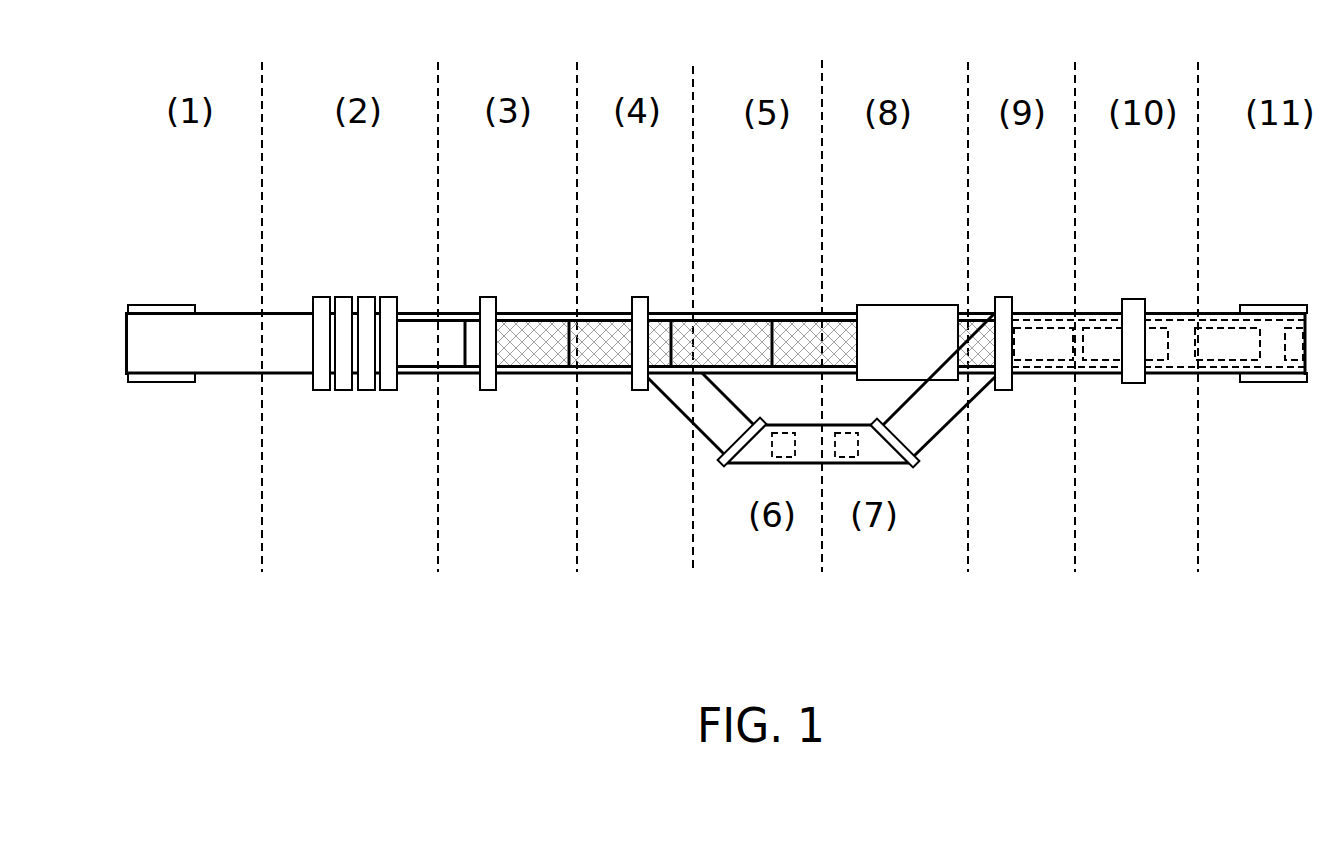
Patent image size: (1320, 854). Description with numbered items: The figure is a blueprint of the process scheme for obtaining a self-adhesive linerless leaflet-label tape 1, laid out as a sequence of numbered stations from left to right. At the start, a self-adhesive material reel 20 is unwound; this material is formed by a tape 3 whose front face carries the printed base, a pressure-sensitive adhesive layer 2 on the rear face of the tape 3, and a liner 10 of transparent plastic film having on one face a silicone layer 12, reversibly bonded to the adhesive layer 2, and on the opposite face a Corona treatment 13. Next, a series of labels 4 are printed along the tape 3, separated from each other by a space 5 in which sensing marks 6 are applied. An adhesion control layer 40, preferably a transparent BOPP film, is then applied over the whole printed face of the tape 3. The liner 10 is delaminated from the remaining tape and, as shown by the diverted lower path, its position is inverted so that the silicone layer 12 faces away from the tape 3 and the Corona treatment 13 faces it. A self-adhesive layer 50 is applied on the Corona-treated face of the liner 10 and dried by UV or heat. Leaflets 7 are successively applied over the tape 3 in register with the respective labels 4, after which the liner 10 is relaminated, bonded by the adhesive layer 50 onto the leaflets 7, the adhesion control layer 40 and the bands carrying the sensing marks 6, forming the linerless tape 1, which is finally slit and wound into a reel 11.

The self-adhesive linerless leaflet-label tape 1 is at (1158, 294).
The pressure-sensitive adhesive layer 2 is at (422, 432).
The tape 3 is at (422, 432).
The labels 4 is at (364, 401).
The space 5 is at (364, 401).
The sensing marks 6 is at (415, 343).
The leaflets 7 is at (966, 328).
The liner 10 is at (422, 432).
The reel 11 is at (1272, 327).
The silicone layer 12 is at (422, 432).
The Corona treatment 13 is at (160, 343).
The self-adhesive material reel 20 is at (415, 432).
The adhesion control layer 40 is at (525, 350).
The self-adhesive layer 50 is at (812, 445).